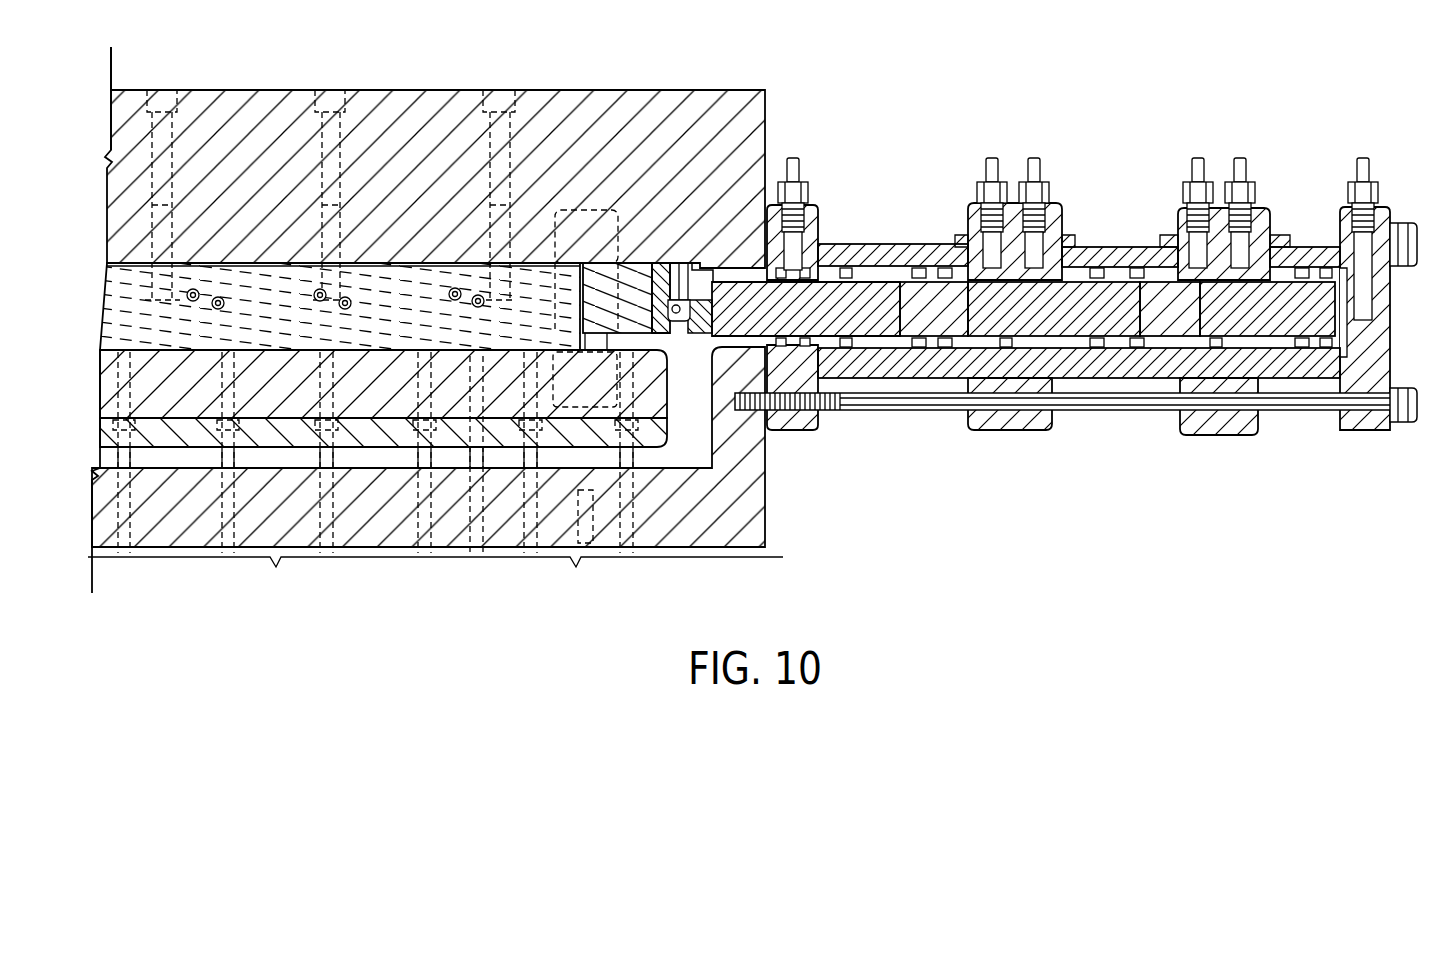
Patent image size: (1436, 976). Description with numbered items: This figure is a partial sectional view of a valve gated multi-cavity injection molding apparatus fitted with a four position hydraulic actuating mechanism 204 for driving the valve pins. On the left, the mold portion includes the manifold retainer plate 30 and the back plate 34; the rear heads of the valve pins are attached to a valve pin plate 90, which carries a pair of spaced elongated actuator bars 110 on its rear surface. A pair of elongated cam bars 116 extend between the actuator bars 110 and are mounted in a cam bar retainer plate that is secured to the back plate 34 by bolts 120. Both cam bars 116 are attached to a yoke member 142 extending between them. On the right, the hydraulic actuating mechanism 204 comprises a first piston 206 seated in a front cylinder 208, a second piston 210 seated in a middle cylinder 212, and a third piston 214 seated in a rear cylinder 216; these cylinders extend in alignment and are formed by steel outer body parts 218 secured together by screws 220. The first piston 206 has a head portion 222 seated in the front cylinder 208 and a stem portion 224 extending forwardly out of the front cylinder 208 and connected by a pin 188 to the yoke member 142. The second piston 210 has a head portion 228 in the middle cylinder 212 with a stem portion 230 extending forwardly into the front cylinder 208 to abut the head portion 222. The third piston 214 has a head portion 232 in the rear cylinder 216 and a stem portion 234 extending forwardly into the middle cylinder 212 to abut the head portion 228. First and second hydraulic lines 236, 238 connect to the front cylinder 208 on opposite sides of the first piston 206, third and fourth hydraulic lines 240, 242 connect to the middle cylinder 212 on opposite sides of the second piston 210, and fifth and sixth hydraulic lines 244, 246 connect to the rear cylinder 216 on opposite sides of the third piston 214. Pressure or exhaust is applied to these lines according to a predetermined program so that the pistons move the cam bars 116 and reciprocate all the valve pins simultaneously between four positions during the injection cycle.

The manifold retainer plate 30 is at (377, 525).
The back plate 34 is at (254, 112).
The valve pin plate 90 is at (162, 402).
The actuator bars 110 is at (183, 342).
The cam bars 116 is at (633, 270).
The bolts 120 is at (331, 100).
The yoke member 142 is at (660, 268).
The pin 188 is at (677, 305).
The hydraulic actuating mechanism 204 is at (1392, 443).
The first piston 206 is at (895, 318).
The front cylinder 208 is at (873, 268).
The second piston 210 is at (1086, 310).
The middle cylinder 212 is at (1086, 275).
The third piston 214 is at (1267, 338).
The rear cylinder 216 is at (1282, 270).
The outer body parts 218 is at (1367, 373).
The screws 220 is at (1220, 410).
The head portion 222 is at (936, 330).
The stem portion 224 is at (760, 307).
The head portion 228 is at (1150, 325).
The stem portion 230 is at (1034, 412).
The head portion 232 is at (1327, 347).
The stem portion 234 is at (1213, 338).
The first hydraulic line 236 is at (793, 160).
The second hydraulic line 238 is at (991, 160).
The third hydraulic line 240 is at (1034, 160).
The fourth hydraulic line 242 is at (1197, 160).
The fifth hydraulic line 244 is at (1240, 160).
The sixth hydraulic line 246 is at (1362, 165).